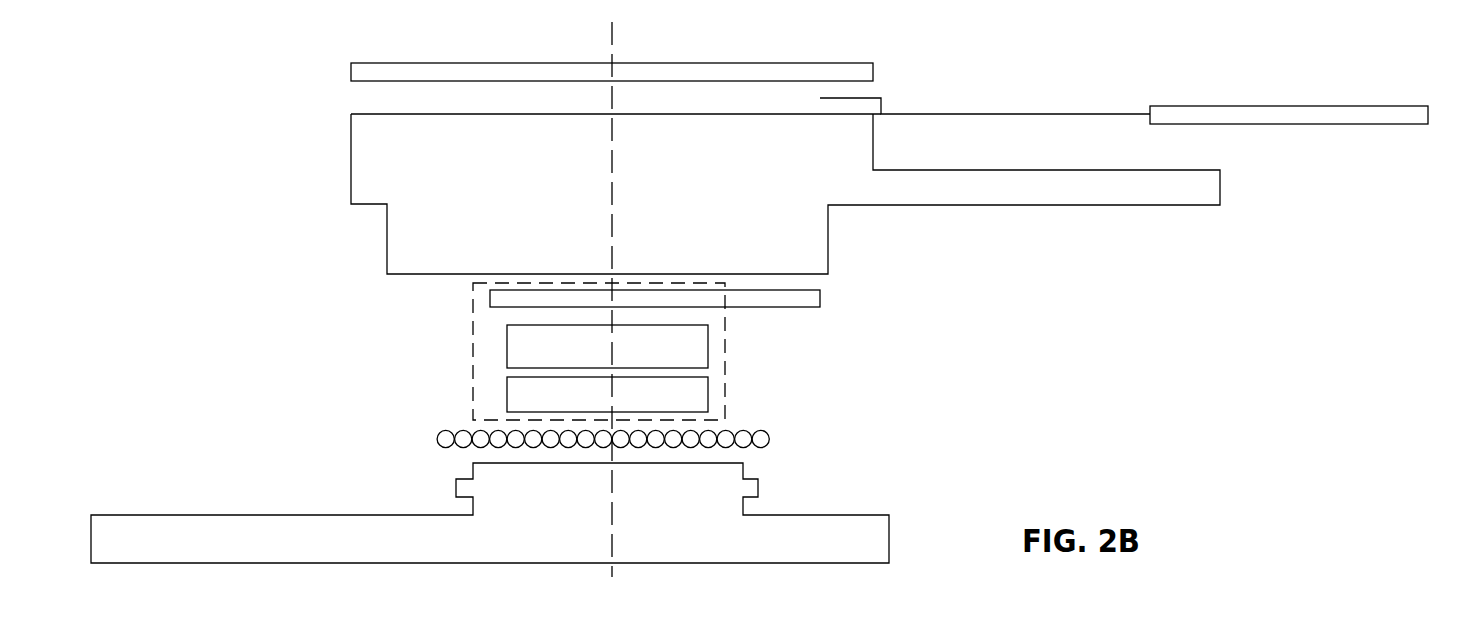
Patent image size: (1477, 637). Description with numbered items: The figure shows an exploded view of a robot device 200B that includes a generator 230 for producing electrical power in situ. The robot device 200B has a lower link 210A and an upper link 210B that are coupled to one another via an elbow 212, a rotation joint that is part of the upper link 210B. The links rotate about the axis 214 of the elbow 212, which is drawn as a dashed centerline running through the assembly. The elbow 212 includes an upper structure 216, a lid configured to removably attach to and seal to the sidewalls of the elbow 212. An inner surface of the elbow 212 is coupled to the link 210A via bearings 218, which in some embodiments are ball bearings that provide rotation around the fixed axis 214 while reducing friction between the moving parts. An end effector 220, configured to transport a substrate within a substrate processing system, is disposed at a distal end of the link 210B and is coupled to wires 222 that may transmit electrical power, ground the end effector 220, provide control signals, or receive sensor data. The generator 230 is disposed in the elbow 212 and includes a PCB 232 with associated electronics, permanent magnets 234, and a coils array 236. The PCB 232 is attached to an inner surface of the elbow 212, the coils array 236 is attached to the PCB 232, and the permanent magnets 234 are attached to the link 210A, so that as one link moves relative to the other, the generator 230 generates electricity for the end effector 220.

The robot device 200B is at (194, 81).
The link 210A is at (263, 459).
The link 210B is at (805, 205).
The elbow 212 is at (720, 194).
The axis 214 is at (612, 55).
The upper structure 216 is at (873, 63).
The bearings 218 is at (436, 432).
The end effector 220 is at (1287, 106).
The wires 222 is at (1090, 114).
The generator 230 is at (647, 351).
The PCB 232 is at (820, 297).
The permanent magnets 234 is at (543, 404).
The coils array 236 is at (543, 356).